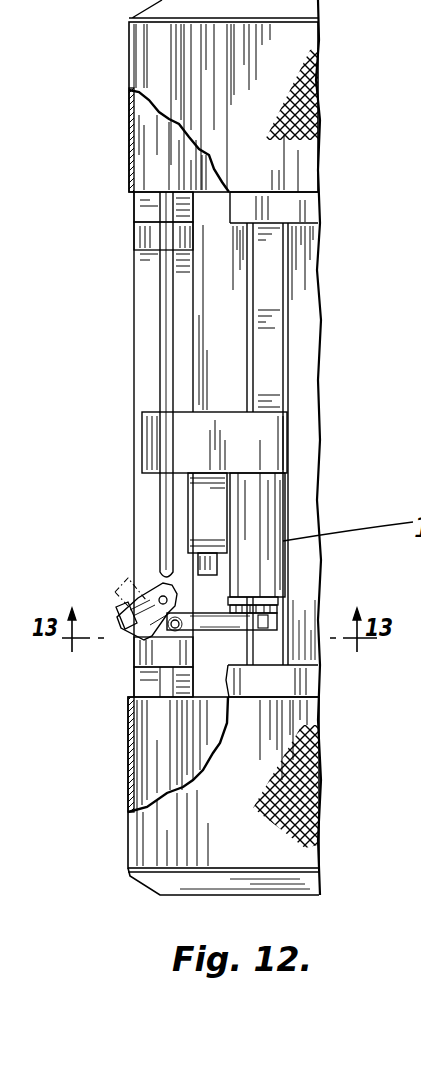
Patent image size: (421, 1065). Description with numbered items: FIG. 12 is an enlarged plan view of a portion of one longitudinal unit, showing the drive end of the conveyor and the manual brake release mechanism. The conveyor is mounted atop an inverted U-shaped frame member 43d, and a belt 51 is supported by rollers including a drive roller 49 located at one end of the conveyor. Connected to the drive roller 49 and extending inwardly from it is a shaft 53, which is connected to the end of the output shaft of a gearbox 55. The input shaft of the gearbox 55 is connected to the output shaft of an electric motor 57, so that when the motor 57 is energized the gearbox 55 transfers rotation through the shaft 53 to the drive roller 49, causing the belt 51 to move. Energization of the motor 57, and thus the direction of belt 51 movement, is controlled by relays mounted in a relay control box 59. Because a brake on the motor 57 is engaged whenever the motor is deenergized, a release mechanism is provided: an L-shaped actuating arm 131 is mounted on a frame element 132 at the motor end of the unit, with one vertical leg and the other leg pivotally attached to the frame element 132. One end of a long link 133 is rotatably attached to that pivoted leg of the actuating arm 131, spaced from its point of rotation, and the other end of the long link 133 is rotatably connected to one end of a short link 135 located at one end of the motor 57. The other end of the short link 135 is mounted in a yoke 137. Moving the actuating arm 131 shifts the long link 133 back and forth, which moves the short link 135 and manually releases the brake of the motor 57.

The drive roller 49 is at (147, 137).
The belt 51 is at (147, 55).
The shaft 53 is at (165, 301).
The frame element 132 is at (142, 380).
The inverted U-shaped frame member 43d is at (268, 300).
The gearbox 55 is at (155, 447).
The relay control box 59 is at (200, 523).
The electric motor 57 is at (277, 531).
The yoke 137 is at (267, 573).
The short link 135 is at (227, 594).
The long link 133 is at (212, 631).
The L-shaped actuating arm 131 is at (117, 603).